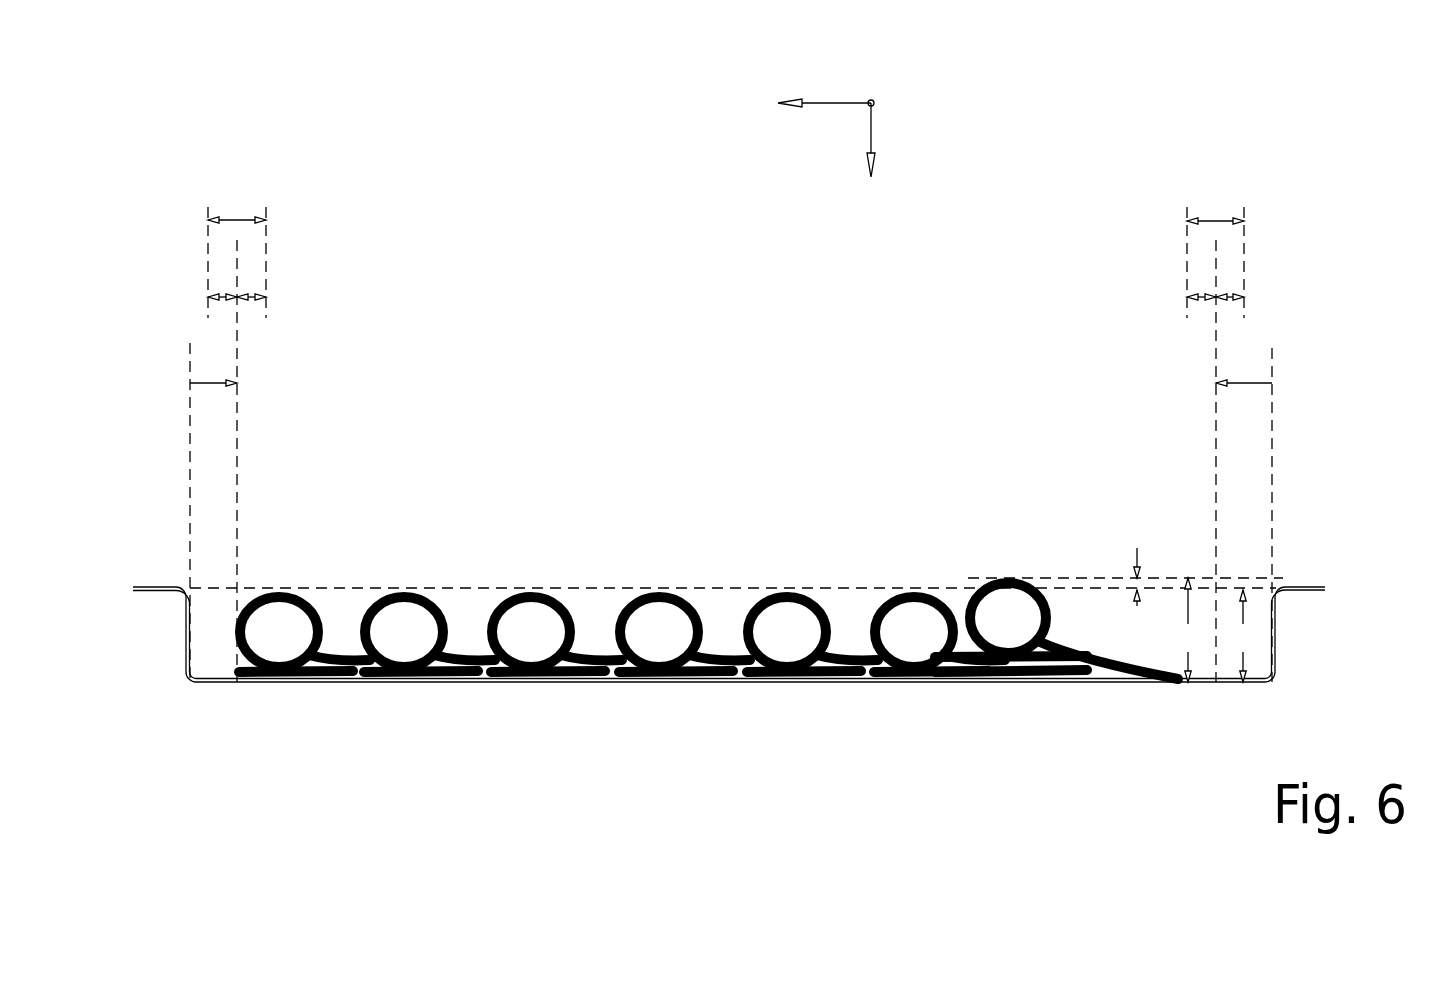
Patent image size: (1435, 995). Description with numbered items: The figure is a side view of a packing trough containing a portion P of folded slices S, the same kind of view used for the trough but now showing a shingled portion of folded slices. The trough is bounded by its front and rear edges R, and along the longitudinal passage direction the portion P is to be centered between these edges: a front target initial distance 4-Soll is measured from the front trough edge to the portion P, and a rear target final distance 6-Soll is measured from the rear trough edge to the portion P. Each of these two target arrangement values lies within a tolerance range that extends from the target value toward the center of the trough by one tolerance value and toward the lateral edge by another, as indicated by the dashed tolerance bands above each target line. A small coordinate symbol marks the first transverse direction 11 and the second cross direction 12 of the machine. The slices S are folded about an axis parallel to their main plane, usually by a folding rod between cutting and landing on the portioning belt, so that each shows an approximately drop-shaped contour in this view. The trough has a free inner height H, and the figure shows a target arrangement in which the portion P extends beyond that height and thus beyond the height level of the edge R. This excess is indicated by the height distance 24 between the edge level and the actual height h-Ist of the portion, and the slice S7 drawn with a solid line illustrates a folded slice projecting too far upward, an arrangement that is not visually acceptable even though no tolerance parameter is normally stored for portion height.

The second cross direction 12 is at (878, 97).
The first transverse direction 11 is at (873, 138).
The edge R is at (1310, 587).
The front target initial distance 4-Soll is at (190, 383).
The rear target final distance 6-Soll is at (1272, 383).
The portion P is at (570, 602).
The slice S is at (900, 592).
The slice S7 is at (1050, 628).
The height distance 24 is at (1137, 552).
The actual height h-Ist is at (1181, 630).
The free inner height H is at (1243, 636).